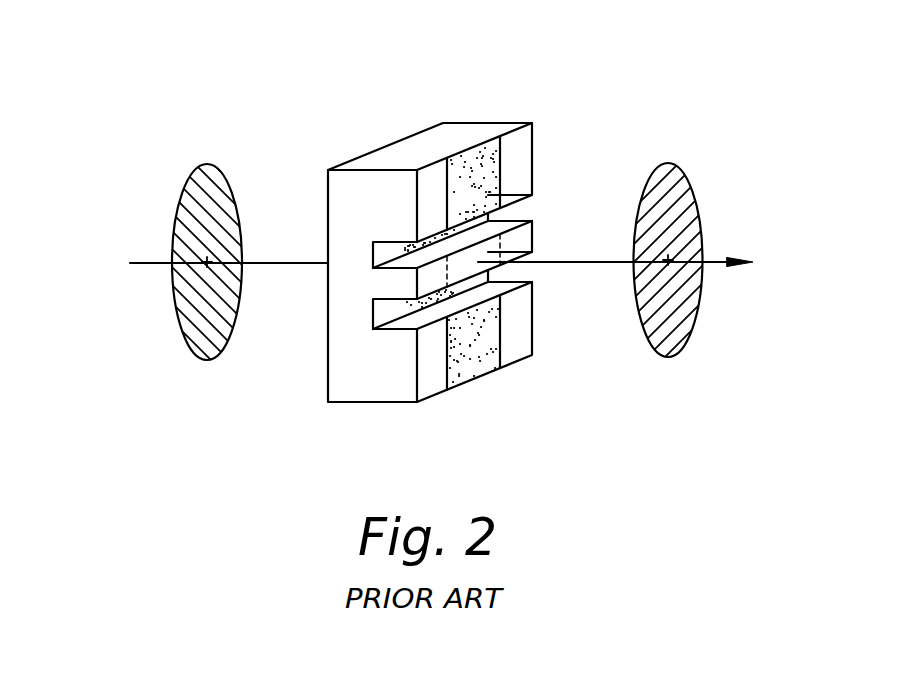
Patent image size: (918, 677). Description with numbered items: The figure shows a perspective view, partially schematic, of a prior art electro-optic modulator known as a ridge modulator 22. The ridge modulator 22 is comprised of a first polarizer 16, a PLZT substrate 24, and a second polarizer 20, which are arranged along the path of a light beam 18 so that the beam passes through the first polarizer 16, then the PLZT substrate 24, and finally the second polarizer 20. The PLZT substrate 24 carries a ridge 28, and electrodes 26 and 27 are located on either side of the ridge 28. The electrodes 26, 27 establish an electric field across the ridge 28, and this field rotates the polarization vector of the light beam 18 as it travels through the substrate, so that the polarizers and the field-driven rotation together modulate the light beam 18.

The first polarizer 16 is at (229, 208).
The light beam 18 is at (137, 265).
The second polarizer 20 is at (677, 346).
The ridge modulator 22 is at (425, 238).
The PLZT substrate 24 is at (395, 147).
The electrode 26 is at (481, 176).
The electrode 27 is at (468, 362).
The ridge 28 is at (517, 240).